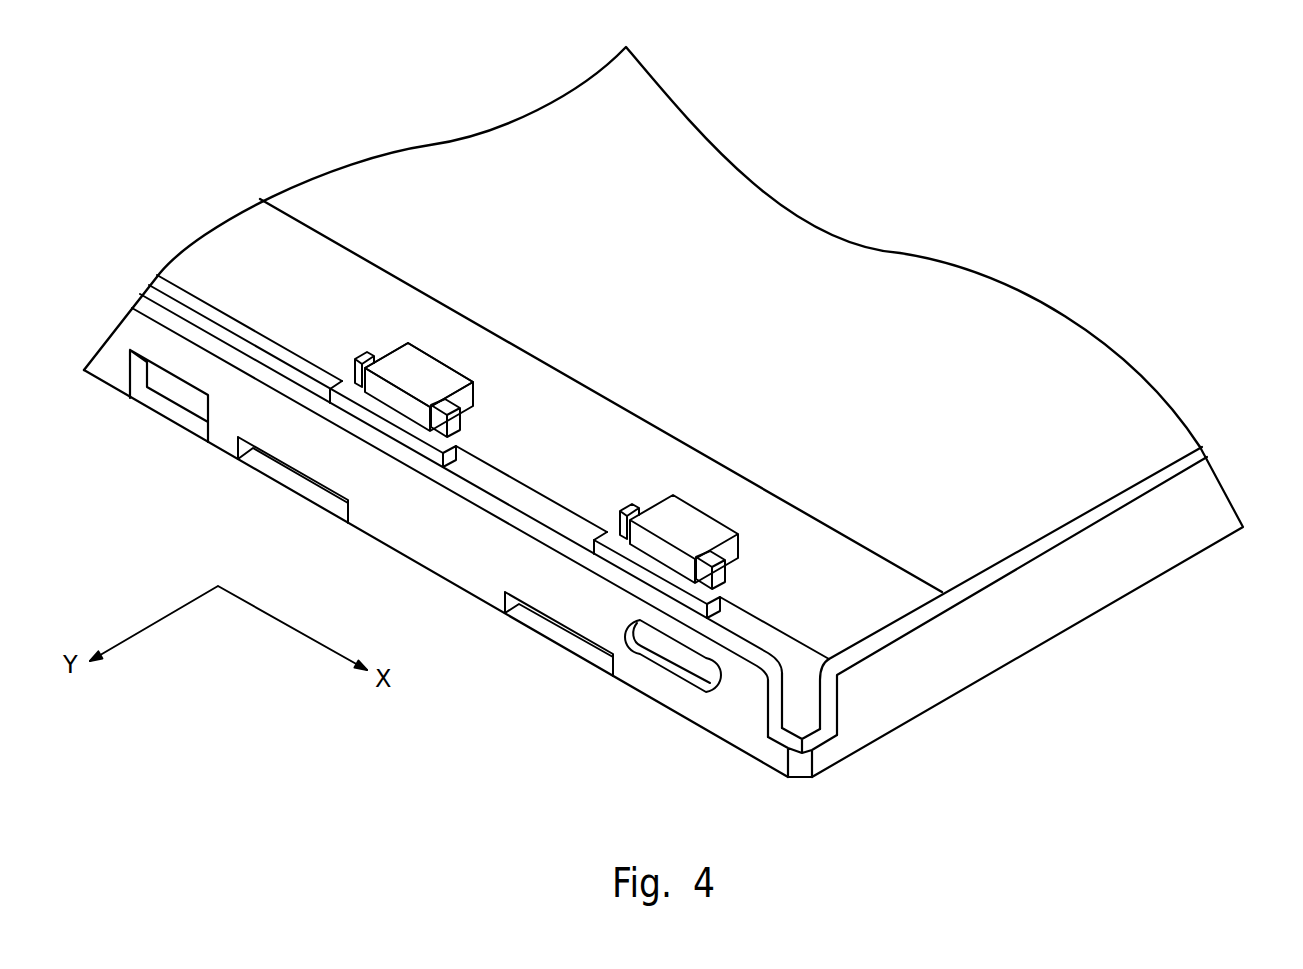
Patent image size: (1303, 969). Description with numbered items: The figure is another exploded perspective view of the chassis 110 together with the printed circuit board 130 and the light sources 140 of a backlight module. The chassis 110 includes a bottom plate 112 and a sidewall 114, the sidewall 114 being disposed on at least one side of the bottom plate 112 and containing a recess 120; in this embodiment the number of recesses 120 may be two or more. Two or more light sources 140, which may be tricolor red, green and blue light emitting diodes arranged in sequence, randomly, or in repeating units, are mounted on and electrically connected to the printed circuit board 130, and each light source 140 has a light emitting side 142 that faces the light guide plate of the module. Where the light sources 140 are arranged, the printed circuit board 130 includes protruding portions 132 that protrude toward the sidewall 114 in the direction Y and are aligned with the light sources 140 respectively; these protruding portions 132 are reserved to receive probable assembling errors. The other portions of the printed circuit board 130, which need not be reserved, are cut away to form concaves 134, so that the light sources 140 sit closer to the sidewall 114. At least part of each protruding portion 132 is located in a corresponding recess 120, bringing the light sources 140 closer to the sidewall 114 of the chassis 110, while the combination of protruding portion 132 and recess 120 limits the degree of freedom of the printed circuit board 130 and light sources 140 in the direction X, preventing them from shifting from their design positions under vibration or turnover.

The chassis 110 is at (1190, 697).
The bottom plate 112 is at (802, 693).
The sidewall 114 is at (738, 703).
The recess 120 is at (618, 667).
The printed circuit board 130 is at (228, 260).
The protruding portion 132 is at (397, 418).
The concave 134 is at (535, 483).
The light source 140 is at (423, 373).
The light emitting side 142 is at (450, 358).